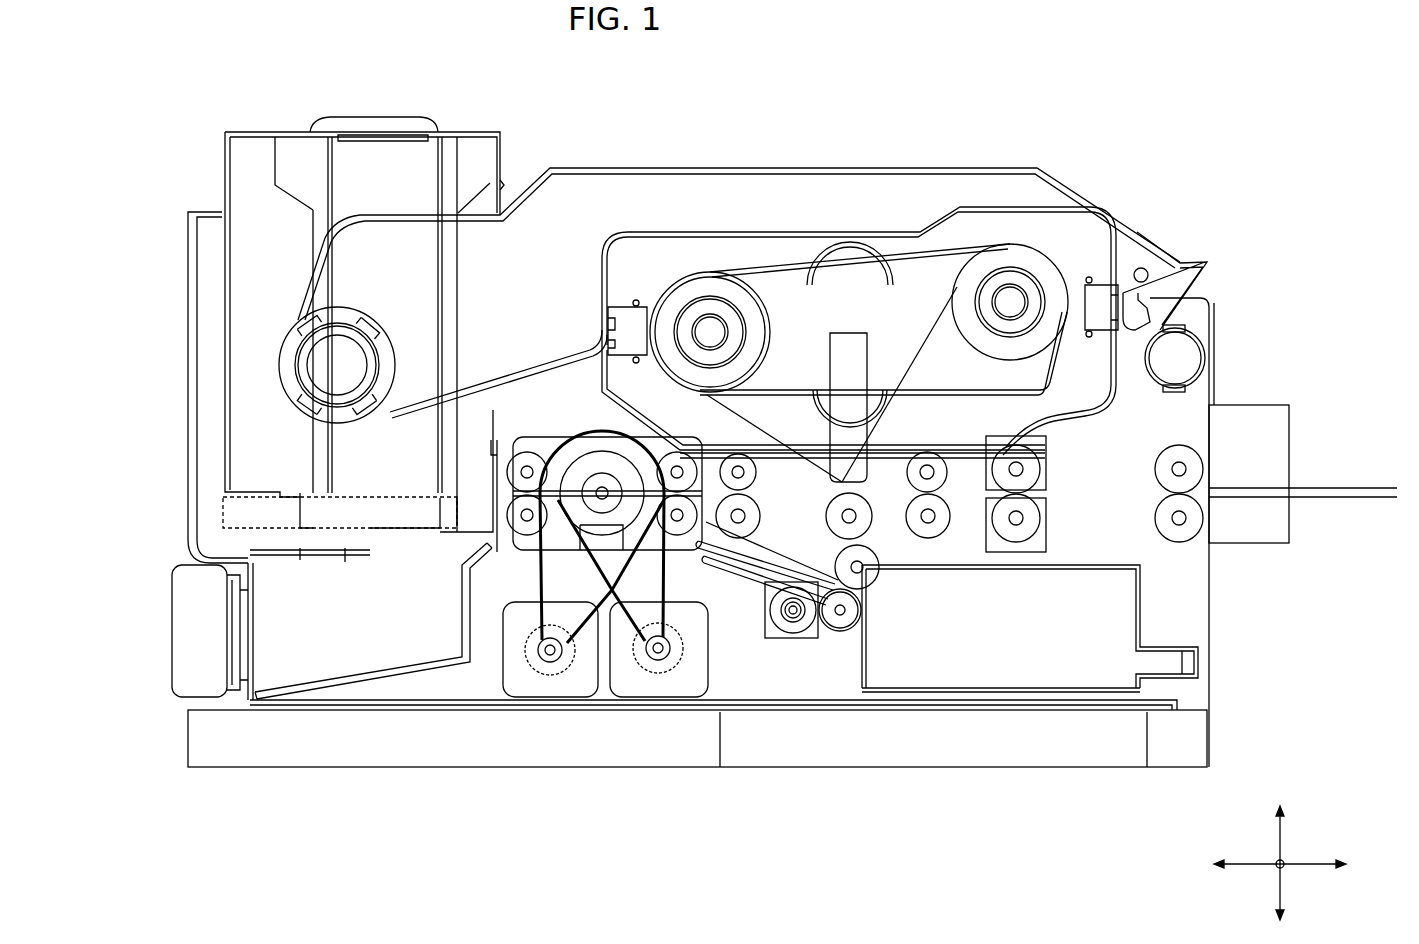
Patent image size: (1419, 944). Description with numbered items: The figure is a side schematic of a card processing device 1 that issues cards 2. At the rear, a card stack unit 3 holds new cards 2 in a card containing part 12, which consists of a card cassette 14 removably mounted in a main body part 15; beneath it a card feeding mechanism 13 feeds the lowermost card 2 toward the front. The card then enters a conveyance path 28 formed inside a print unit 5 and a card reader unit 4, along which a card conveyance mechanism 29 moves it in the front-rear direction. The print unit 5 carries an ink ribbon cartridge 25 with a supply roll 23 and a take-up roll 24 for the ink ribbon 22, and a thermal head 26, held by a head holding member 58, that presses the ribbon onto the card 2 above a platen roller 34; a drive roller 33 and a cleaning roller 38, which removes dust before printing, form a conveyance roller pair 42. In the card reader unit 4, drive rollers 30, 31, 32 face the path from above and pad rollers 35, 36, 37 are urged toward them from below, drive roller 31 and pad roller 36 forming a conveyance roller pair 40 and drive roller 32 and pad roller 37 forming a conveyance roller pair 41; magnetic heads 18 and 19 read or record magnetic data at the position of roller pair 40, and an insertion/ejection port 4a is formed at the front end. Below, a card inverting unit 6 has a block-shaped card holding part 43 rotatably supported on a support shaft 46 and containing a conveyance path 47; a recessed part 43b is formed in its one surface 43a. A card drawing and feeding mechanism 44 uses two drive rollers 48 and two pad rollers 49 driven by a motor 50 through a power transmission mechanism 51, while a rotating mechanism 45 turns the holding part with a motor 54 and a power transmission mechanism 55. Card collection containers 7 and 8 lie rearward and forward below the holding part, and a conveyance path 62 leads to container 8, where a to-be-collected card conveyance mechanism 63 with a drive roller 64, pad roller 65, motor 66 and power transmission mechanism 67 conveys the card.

The card processing device 1 is at (1141, 170).
The card 2 is at (1362, 486).
The card stack unit 3 is at (462, 128).
The card reader unit 4 is at (1235, 378).
The insertion/ejection port 4a is at (1292, 486).
The print unit 5 is at (911, 188).
The card inverting unit 6 is at (581, 380).
The card collection container 7 is at (385, 676).
The card collection container 8 is at (985, 693).
The card containing part 12 is at (258, 130).
The card feeding mechanism 13 is at (300, 495).
The card cassette 14 is at (378, 510).
The main body part 15 is at (188, 270).
The magnetic head 18 is at (1047, 445).
The magnetic head 19 is at (1047, 520).
The ink ribbon 22 is at (925, 352).
The supply roll 23 is at (1008, 244).
The take-up roll 24 is at (712, 272).
The ink ribbon cartridge 25 is at (770, 230).
The thermal head 26 is at (825, 440).
The conveyance path 28 is at (965, 472).
The card conveyance mechanism 29 is at (1224, 554).
The drive roller 30 is at (1162, 450).
The drive roller 31 is at (1042, 472).
The drive roller 32 is at (927, 452).
The drive roller 33 is at (760, 520).
The platen roller 34 is at (826, 514).
The pad roller 35 is at (1179, 545).
The pad roller 36 is at (1016, 545).
The pad roller 37 is at (932, 540).
The cleaning roller 38 is at (758, 476).
The conveyance roller pair 40 is at (1038, 548).
The conveyance roller pair 41 is at (954, 545).
The conveyance roller pair 42 is at (729, 446).
The card holding part 43 is at (545, 435).
The one surface 43a is at (556, 552).
The recessed part 43b is at (630, 560).
The card drawing and feeding mechanism 44 is at (722, 684).
The rotating mechanism 45 is at (496, 709).
The support shaft 46 is at (618, 450).
The conveyance path 47 is at (600, 472).
The drive roller 48 is at (526, 450).
The pad roller 49 is at (522, 537).
The motor 50 is at (662, 698).
The power transmission mechanism 51 is at (692, 627).
The motor 54 is at (550, 698).
The power transmission mechanism 55 is at (519, 634).
The head holding member 58 is at (848, 332).
The conveyance path 62 is at (750, 560).
The to-be-collected card conveyance mechanism 63 is at (885, 623).
The drive roller 64 is at (842, 632).
The pad roller 65 is at (872, 580).
The motor 66 is at (788, 640).
The power transmission mechanism 67 is at (811, 642).